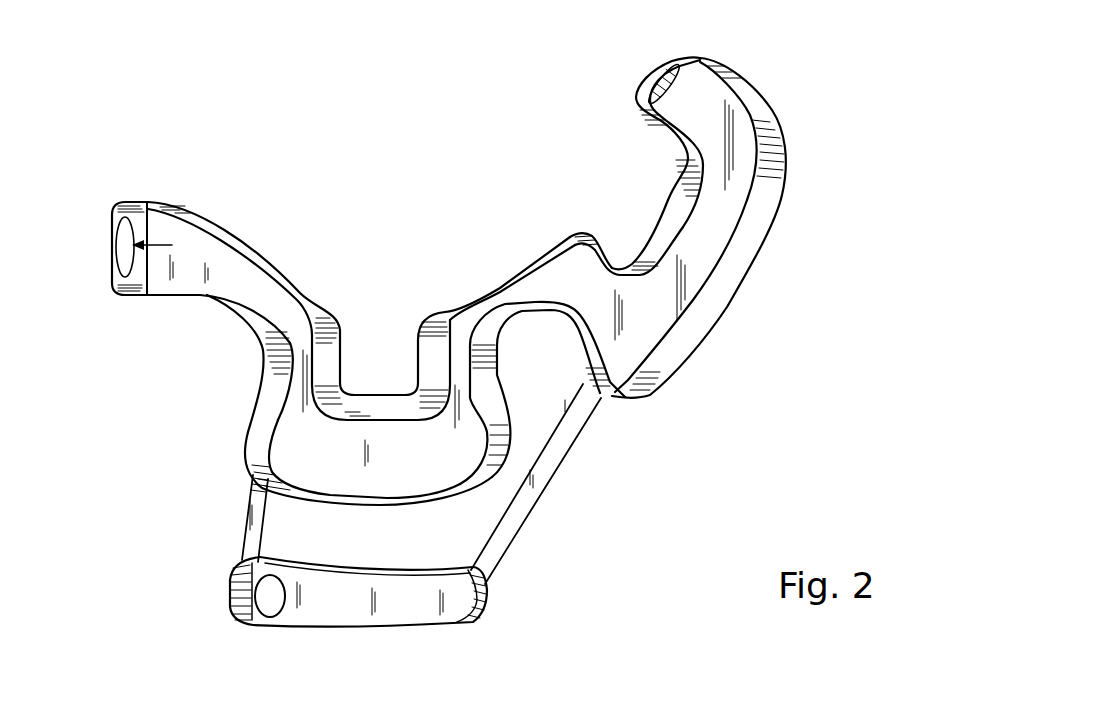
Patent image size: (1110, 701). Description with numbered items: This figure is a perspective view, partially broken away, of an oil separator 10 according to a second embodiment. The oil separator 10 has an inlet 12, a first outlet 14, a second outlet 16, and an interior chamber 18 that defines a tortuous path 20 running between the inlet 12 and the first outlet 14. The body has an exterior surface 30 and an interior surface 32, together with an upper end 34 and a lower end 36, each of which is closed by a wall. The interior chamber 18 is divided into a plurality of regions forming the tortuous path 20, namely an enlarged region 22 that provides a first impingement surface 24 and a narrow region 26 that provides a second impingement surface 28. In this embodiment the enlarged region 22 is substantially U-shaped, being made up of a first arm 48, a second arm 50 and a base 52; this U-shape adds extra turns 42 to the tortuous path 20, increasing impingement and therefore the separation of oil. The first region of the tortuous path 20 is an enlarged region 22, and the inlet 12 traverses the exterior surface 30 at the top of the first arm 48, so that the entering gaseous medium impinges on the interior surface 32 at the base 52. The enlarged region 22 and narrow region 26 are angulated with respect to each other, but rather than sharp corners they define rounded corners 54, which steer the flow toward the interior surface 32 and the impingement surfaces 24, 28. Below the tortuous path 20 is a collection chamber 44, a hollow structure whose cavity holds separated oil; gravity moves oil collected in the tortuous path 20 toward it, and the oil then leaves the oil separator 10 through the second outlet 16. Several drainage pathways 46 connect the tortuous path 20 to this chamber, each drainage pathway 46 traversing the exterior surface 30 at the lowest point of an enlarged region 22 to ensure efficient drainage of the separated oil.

The oil separator 10 is at (396, 103).
The inlet 12 is at (717, 200).
The first outlet 14 is at (118, 250).
The second outlet 16 is at (272, 605).
The interior chamber 18 is at (628, 325).
The tortuous path 20 is at (300, 353).
The enlarged region 22 is at (714, 228).
The first impingement surface 24 is at (772, 118).
The narrow region 26 is at (498, 312).
The second impingement surface 28 is at (588, 348).
The exterior surface 30 is at (201, 233).
The interior surface 32 is at (276, 408).
The upper end 34 is at (740, 84).
The lower end 36 is at (462, 597).
The turns 42 is at (300, 327).
The collection chamber 44 is at (358, 618).
The drainage pathway 46 is at (258, 542).
The first arm 48 is at (707, 90).
The second arm 50 is at (613, 267).
The base 52 is at (692, 273).
The rounded corners 54 is at (328, 310).